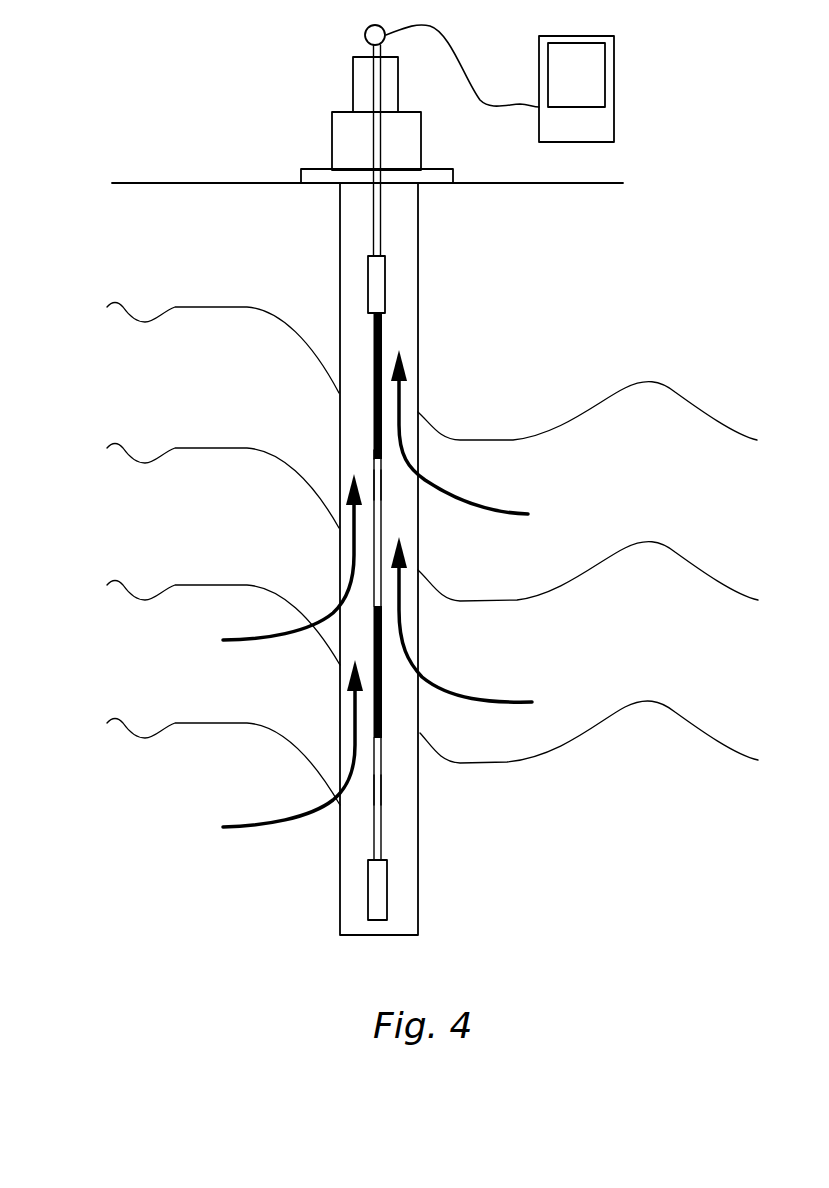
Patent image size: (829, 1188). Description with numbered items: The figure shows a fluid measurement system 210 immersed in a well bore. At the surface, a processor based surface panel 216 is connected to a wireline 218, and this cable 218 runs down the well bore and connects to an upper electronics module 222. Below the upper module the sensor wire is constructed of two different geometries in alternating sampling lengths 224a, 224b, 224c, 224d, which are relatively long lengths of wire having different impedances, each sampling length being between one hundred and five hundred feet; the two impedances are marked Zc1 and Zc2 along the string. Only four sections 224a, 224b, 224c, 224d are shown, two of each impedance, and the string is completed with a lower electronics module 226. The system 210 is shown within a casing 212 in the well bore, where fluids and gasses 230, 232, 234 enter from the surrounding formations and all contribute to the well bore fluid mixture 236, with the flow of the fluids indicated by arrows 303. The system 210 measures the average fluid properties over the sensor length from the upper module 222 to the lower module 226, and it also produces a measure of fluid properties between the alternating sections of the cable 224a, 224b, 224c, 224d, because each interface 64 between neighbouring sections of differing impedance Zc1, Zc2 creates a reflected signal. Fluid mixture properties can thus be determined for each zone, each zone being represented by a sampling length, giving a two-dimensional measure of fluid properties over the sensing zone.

The fluid measurement system 210 is at (180, 278).
The casing 212 is at (419, 232).
The processor based surface panel 216 is at (588, 72).
The wireline 218 is at (376, 211).
The upper electronics module 222 is at (384, 283).
The sensor wire section 224a is at (383, 404).
The sensor wire section 224b is at (383, 483).
The sensor wire section 224c is at (383, 680).
The sensor wire section 224d is at (380, 790).
The lower electronics module 226 is at (377, 900).
The fluid or gas 230 is at (170, 826).
The fluid or gas 232 is at (170, 681).
The fluid or gas 234 is at (170, 536).
The well bore fluid mixture 236 is at (350, 289).
The fluid flow arrows 303 is at (409, 349).
The interface 64 is at (373, 459).
The zone Zc1 is at (383, 332).
The zone Zc2 is at (383, 508).